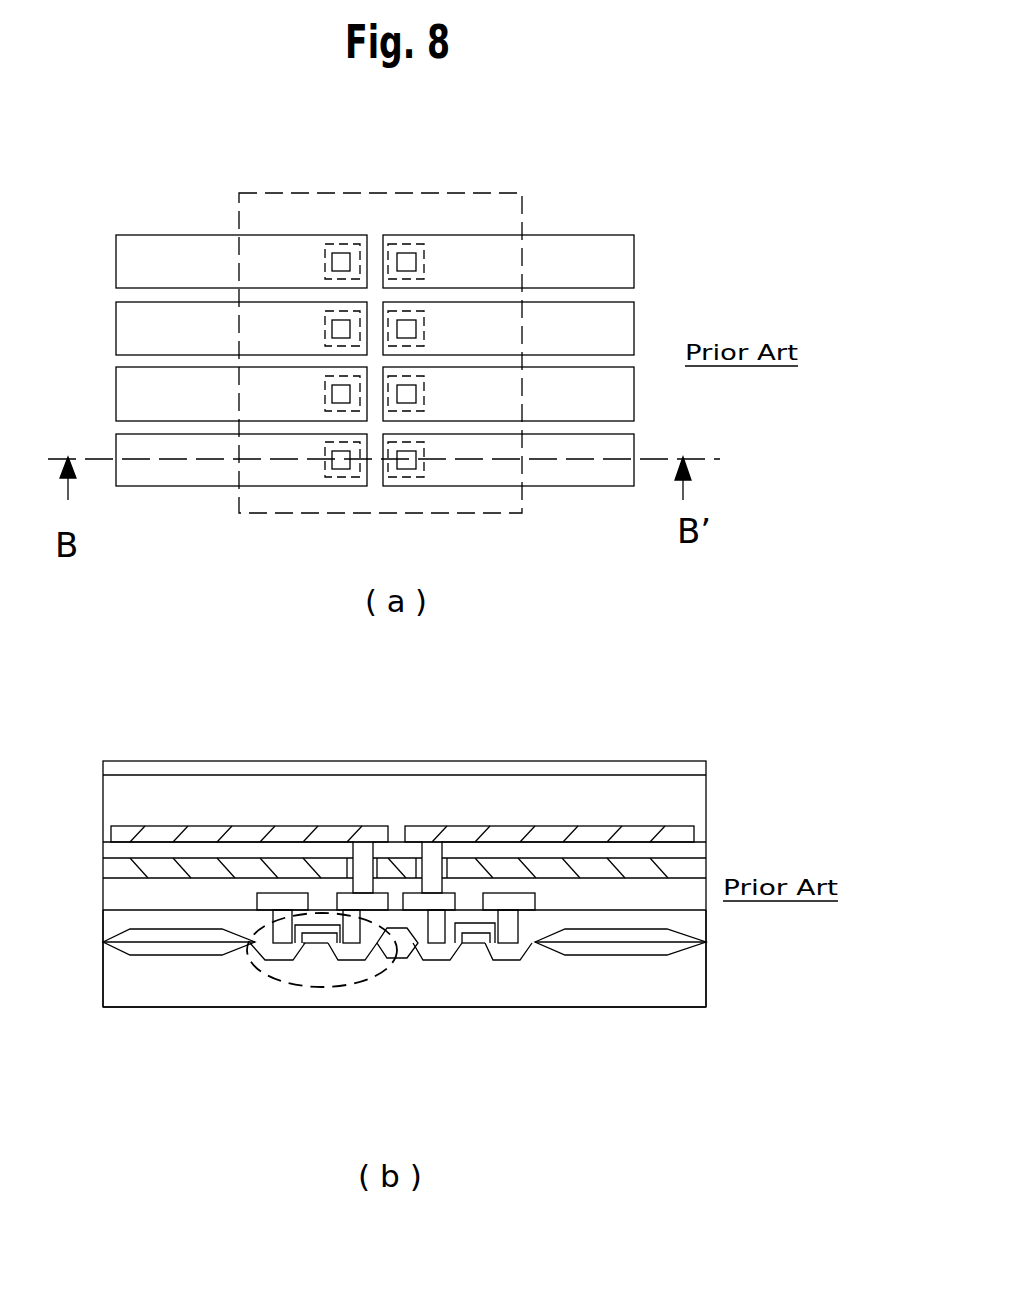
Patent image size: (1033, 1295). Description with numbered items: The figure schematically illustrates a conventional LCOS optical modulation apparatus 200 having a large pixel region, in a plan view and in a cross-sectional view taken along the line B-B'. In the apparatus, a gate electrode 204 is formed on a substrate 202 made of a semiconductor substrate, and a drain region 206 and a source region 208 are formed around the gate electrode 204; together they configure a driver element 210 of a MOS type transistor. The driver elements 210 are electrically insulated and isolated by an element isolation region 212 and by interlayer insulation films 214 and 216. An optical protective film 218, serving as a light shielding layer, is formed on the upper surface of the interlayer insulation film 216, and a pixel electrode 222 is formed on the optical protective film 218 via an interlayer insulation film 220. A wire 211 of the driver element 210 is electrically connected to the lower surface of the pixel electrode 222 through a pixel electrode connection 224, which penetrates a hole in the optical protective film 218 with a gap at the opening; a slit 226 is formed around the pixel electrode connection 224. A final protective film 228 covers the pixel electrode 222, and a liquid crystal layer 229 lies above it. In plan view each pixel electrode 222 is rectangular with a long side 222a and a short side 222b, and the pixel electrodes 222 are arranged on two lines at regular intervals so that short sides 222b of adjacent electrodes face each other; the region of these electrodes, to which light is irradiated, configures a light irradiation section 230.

The optical modulation apparatus 200 is at (652, 148).
The substrate 202 is at (480, 988).
The gate electrode 204 is at (317, 932).
The drain region 206 is at (343, 953).
The source region 208 is at (275, 952).
The driver element 210 is at (290, 1007).
The wire 211 is at (380, 897).
The element isolation region 212 is at (403, 957).
The interlayer insulation film 214 is at (567, 922).
The interlayer insulation film 216 is at (173, 883).
The optical protective film 218 is at (311, 862).
The interlayer insulation film 220 is at (247, 850).
The pixel electrode 222 is at (147, 250).
The long side 222a is at (170, 250).
The short side 222b is at (375, 248).
The pixel electrode connection 224 is at (338, 258).
The slit 226 is at (325, 268).
The final protective film 228 is at (678, 795).
The liquid crystal layer 229 is at (675, 765).
The light irradiation section 230 is at (383, 193).